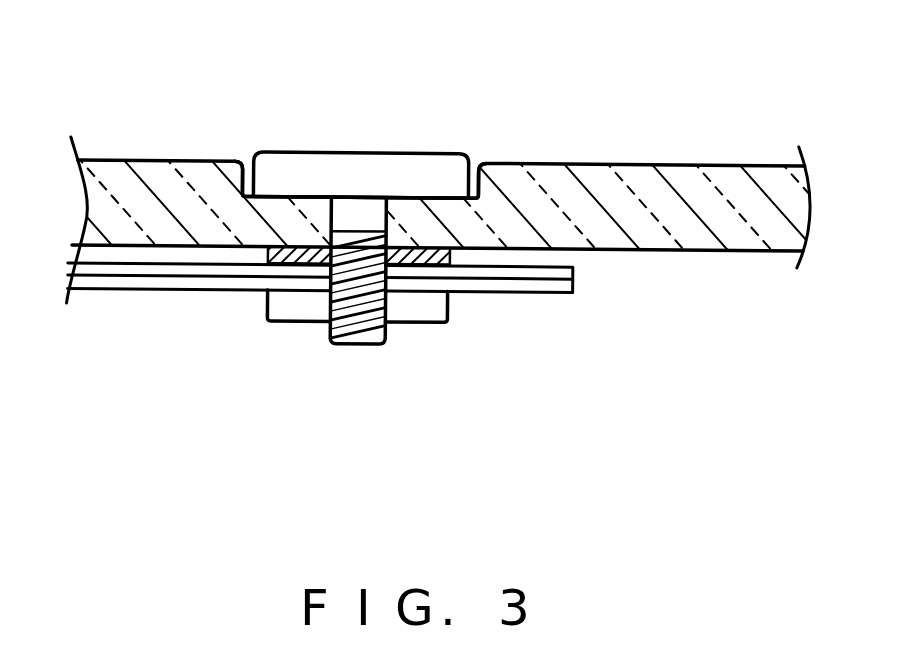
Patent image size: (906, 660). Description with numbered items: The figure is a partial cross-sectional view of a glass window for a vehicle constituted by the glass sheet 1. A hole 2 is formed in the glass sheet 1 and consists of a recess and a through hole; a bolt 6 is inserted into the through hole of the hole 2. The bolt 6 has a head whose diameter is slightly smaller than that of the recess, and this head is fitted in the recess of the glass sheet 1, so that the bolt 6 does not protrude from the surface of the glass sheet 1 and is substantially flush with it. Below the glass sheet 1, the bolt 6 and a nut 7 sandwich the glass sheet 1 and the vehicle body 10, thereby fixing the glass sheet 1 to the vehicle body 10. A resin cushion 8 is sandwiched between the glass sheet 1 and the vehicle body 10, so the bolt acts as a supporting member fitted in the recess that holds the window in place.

The glass sheet 1 is at (730, 165).
The hole 2 is at (231, 137).
The bolt 6 is at (403, 153).
The nut 7 is at (448, 322).
The resin cushion 8 is at (446, 254).
The vehicle body 10 is at (145, 290).